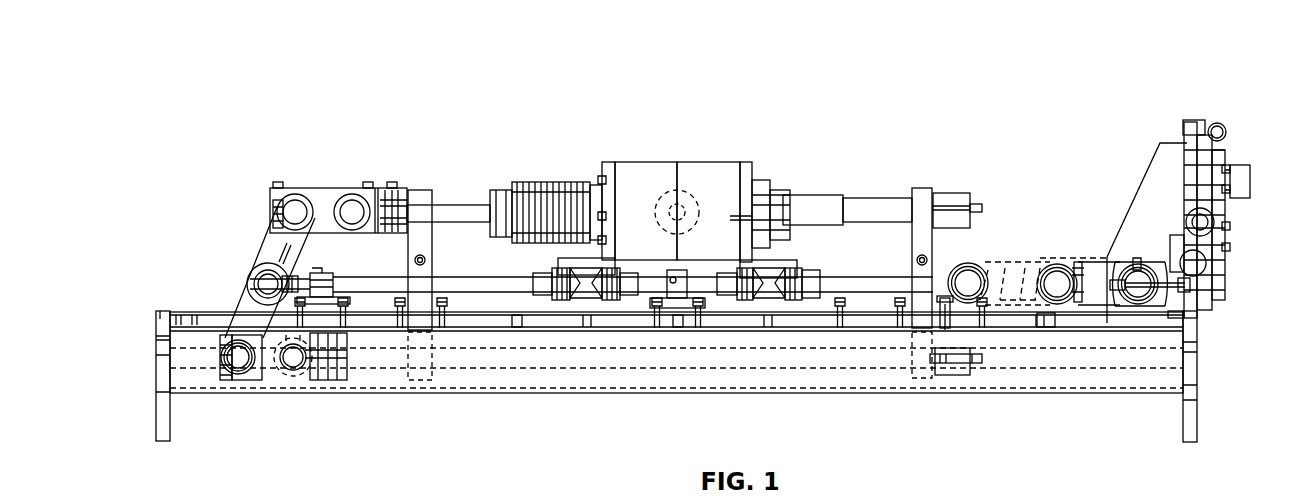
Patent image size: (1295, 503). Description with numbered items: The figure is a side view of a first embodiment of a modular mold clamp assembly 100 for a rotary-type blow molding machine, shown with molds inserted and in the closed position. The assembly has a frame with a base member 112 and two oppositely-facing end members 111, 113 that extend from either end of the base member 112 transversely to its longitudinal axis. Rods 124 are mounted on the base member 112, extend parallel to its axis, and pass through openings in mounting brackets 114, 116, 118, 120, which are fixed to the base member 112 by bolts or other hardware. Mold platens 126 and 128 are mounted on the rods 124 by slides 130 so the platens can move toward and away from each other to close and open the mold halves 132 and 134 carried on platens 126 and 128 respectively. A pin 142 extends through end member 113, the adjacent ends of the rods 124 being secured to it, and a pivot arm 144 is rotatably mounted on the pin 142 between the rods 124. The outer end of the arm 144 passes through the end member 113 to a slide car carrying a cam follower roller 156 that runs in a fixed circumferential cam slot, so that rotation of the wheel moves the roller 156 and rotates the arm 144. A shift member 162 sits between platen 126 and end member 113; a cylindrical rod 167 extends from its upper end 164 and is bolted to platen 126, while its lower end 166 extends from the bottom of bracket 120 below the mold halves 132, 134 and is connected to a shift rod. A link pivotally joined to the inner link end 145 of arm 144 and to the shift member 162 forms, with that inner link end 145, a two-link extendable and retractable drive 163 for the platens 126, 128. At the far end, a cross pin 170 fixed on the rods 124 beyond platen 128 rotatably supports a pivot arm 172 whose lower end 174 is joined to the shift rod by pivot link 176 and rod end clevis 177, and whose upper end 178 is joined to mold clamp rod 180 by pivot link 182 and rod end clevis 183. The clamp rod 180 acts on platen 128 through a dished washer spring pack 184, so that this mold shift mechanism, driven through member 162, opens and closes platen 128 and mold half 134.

The modular mold clamp assembly 100 is at (212, 118).
The end member 111 is at (160, 395).
The base member 112 is at (1022, 372).
The end member 113 is at (1197, 390).
The mounting bracket 114 is at (327, 305).
The mounting bracket 116 is at (418, 325).
The mounting bracket 118 is at (676, 303).
The mounting bracket 120 is at (953, 315).
The rods 124 is at (887, 285).
The mold platen 126 is at (748, 165).
The mold platen 128 is at (605, 163).
The slides 130 is at (775, 268).
The mold half 132 is at (695, 172).
The mold half 134 is at (655, 170).
The pin 142 is at (1188, 283).
The pivot arm 144 is at (1127, 308).
The inner link end 145 is at (1078, 262).
The cam follower roller 156 is at (1250, 175).
The shift member 162 is at (963, 230).
The two-link extendable and retractable drive 163 is at (1095, 318).
The upper end 164 is at (925, 195).
The lower end 166 is at (965, 377).
The cylindrical rod 167 is at (885, 200).
The cross pin 170 is at (247, 288).
The pivot arm 172 is at (268, 236).
The lower end 174 is at (238, 362).
The pivot link 176 is at (291, 374).
The rod end clevis 177 is at (348, 372).
The upper end 178 is at (296, 207).
The mold clamp rod 180 is at (455, 205).
The pivot link 182 is at (352, 205).
The rod end clevis 183 is at (392, 198).
The dished washer spring pack 184 is at (545, 185).